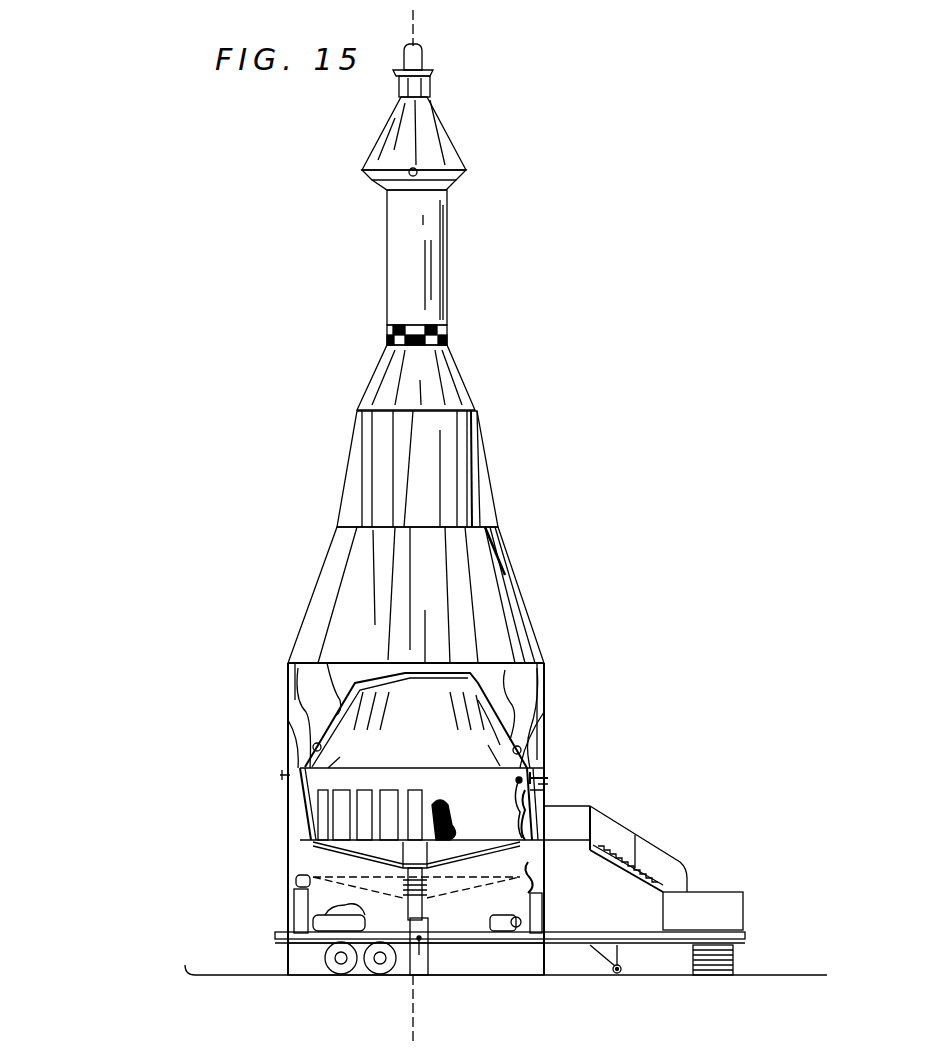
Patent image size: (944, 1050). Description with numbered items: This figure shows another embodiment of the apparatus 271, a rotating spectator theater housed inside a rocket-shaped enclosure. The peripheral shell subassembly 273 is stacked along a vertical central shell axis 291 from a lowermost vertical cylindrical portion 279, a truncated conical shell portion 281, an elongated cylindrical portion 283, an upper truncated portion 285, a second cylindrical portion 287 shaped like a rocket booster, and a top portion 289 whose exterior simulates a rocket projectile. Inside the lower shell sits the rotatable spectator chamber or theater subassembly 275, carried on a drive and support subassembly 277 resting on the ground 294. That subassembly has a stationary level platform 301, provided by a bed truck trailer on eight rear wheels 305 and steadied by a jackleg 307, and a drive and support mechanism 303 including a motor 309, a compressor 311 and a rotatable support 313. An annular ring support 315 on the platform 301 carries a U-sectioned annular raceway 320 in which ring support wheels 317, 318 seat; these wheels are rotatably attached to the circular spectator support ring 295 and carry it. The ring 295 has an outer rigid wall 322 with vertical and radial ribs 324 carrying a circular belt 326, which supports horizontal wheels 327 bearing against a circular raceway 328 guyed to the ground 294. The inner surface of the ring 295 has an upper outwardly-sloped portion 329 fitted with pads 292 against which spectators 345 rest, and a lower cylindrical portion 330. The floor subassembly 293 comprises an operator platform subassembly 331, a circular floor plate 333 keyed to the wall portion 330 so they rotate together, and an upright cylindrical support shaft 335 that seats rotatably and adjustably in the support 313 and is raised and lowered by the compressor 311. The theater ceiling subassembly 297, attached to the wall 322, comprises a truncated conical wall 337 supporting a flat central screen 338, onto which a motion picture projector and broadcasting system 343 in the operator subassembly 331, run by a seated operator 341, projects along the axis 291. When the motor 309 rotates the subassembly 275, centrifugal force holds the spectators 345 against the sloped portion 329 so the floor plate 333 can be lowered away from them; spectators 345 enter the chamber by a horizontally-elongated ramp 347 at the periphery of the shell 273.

The apparatus 271 is at (366, 305).
The peripheral shell subassembly 273 is at (308, 605).
The rotatable spectator chamber or theater subassembly 275 is at (510, 735).
The drive and support subassembly 277 is at (510, 950).
The lowermost vertical cylindrical portion 279 is at (288, 690).
The truncated conical shell portion 281 is at (318, 638).
The elongated cylindrical portion 283 is at (357, 462).
The upper truncated portion 285 is at (468, 382).
The second cylindrical portion 287 is at (445, 276).
The top portion of the shell 289 is at (442, 130).
The vertical central shell axis 291 is at (415, 22).
The pads 292 is at (318, 798).
The floor subassembly 293 is at (340, 822).
The ground 294 is at (481, 959).
The circular spectator support subassembly ring 295 is at (552, 783).
The theater ceiling subassembly 297 is at (518, 717).
The platform 301 is at (645, 935).
The spectator subassembly drive and support mechanism 303 is at (430, 866).
The rear wheels 305 is at (350, 975).
The jack 307 is at (615, 975).
The motor 309 is at (486, 925).
The compressor 311 is at (327, 925).
The rotatable support 313 is at (430, 940).
The annular ring support 315 is at (290, 918).
The ring support wheel 317 is at (292, 861).
The ring support wheel 318 is at (545, 862).
The annular raceway 320 is at (292, 882).
The outer rigid wall 322 is at (548, 806).
The ribs 324 is at (303, 798).
The rigid circular belt 326 is at (535, 757).
The horizontal wheels 327 is at (292, 730).
The circular raceway 328 is at (284, 772).
The upper outwardly-sloped inner surface portion 329 is at (354, 754).
The lower cylindrical portion 330 is at (300, 843).
The operator platform subassembly 331 is at (395, 815).
The circular floor plate 333 is at (476, 836).
The upright cylindrical support shaft 335 is at (400, 862).
The truncated conical wall 337 is at (319, 715).
The flat central screen 338 is at (413, 670).
The operator 341 is at (466, 790).
The motion picture projector and broadcasting system 343 is at (474, 722).
The spectators 345 is at (518, 788).
The horizontally-elongated ramp 347 is at (598, 847).